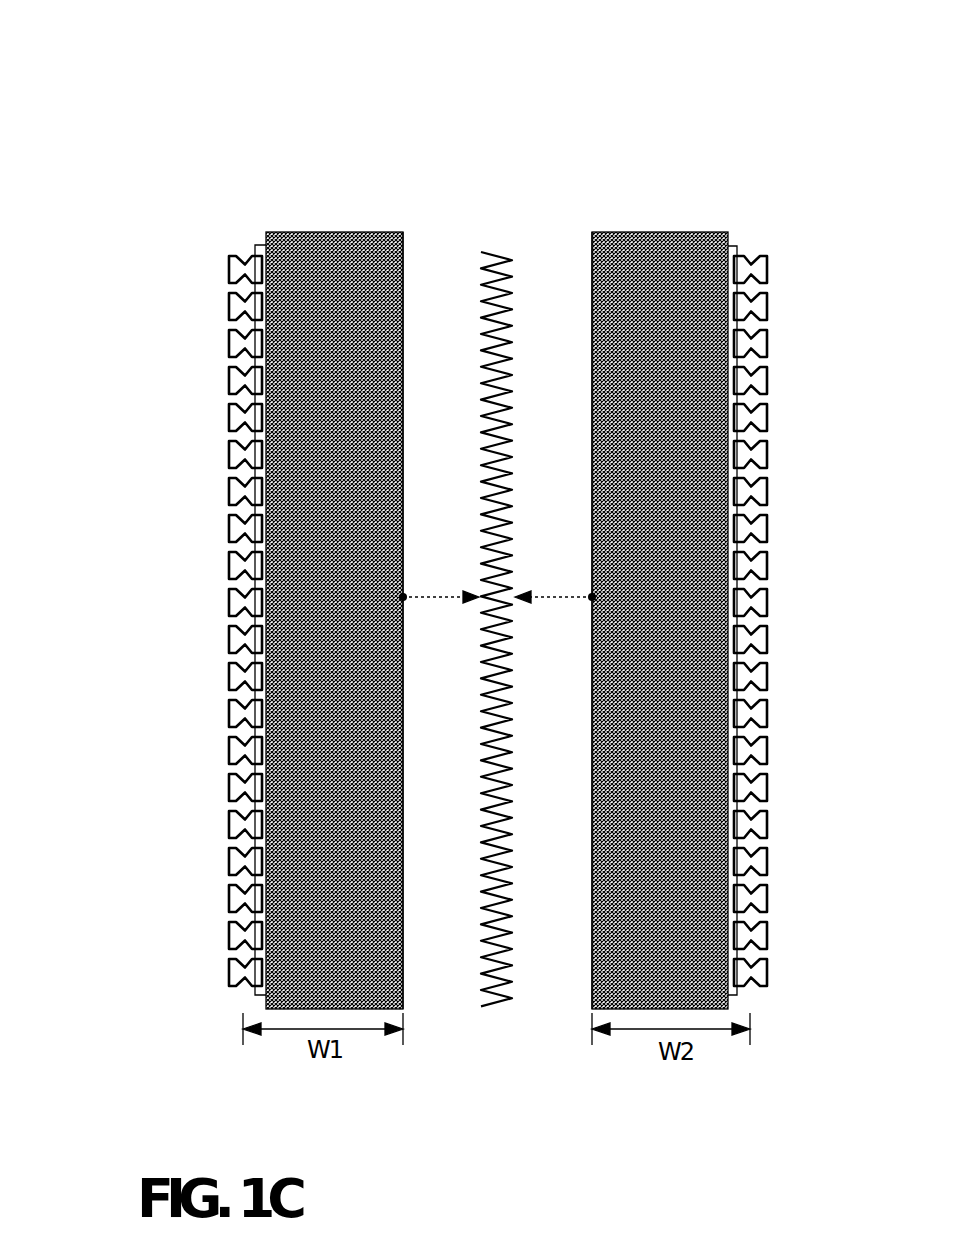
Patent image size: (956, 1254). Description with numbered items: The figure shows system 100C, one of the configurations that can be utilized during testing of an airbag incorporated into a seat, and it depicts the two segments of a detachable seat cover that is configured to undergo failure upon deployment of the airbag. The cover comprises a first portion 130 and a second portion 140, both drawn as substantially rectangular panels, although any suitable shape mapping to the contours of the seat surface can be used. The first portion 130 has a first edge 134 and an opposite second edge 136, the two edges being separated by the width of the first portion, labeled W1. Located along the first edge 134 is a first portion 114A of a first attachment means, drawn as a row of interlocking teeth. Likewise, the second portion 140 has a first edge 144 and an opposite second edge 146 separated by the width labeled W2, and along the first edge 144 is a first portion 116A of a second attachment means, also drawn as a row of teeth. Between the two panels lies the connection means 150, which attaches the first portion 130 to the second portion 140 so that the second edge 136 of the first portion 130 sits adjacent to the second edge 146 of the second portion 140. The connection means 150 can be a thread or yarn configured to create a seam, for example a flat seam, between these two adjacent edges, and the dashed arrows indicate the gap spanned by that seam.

The system 100C is at (145, 57).
The first portion 130 is at (327, 245).
The first edge 134 is at (266, 1000).
The second edge 136 is at (403, 258).
The first portion of first attachment means 114A is at (256, 266).
The second portion 140 is at (678, 243).
The first edge 144 is at (731, 240).
The second edge 146 is at (592, 243).
The first portion of second attachment means 116A is at (744, 264).
The connection means 150 is at (498, 963).